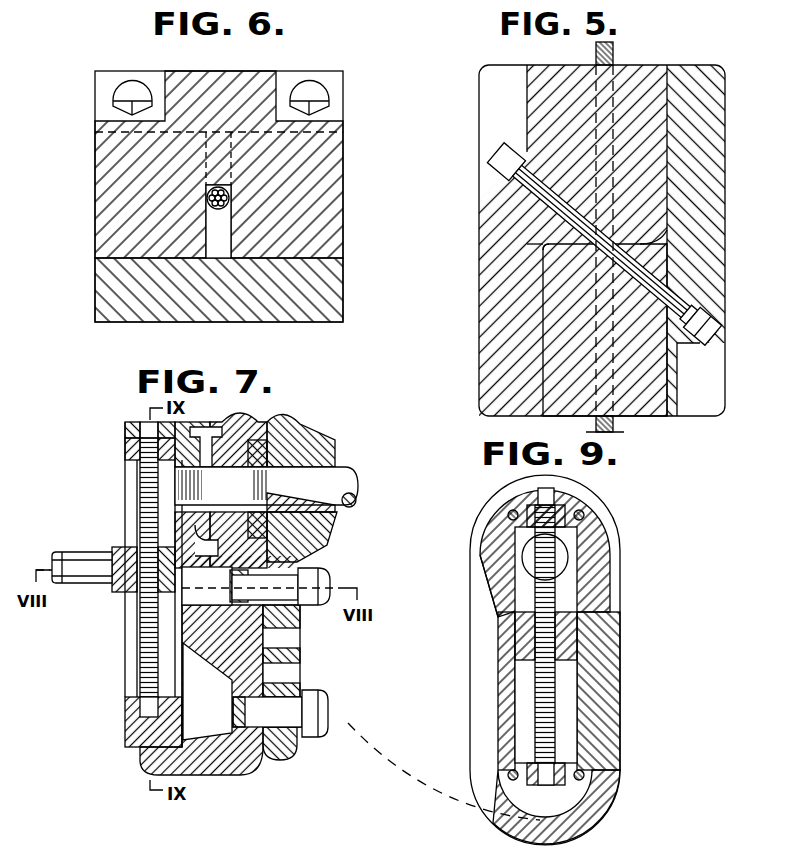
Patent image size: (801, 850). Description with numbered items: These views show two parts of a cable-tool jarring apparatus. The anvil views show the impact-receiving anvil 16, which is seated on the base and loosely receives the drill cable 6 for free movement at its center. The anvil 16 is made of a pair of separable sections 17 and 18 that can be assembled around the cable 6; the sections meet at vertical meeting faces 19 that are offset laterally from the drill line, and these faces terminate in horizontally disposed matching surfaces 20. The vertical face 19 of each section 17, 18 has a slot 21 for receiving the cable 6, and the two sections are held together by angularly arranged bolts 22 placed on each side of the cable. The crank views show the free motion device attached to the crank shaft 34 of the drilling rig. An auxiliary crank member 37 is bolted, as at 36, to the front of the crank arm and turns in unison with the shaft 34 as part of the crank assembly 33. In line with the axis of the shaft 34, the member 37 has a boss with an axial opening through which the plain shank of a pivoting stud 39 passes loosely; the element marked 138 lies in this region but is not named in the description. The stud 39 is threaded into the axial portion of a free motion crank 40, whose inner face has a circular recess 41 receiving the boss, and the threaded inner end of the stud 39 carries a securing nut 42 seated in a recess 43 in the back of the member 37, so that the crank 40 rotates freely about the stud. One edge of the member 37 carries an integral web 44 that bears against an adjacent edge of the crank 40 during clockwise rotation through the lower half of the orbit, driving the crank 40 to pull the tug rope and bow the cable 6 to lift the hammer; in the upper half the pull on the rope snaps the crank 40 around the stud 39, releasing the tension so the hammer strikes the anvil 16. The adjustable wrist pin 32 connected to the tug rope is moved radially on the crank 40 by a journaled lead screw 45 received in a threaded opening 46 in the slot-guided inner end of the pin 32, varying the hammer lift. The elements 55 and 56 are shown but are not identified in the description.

In FIG. 6, the drill cable 6 is at (229, 202).
In FIG. 5, the drill cable 6 is at (596, 55).
In FIG. 6, the impact-receiving anvil 16 is at (95, 218).
In FIG. 5, the impact-receiving anvil 16 is at (479, 258).
In FIG. 6, the anvil section 17 is at (337, 161).
In FIG. 5, the anvil section 17 is at (485, 316).
In FIG. 6, the anvil section 18 is at (323, 302).
In FIG. 5, the anvil section 18 is at (716, 250).
In FIG. 5, the vertical meeting faces 19 is at (667, 113).
In FIG. 5, the horizontally disposed matching surfaces 20 is at (563, 236).
In FIG. 6, the slot 21 is at (219, 243).
In FIG. 6, the angularly arranged bolts 22 is at (118, 100).
In FIG. 5, the angularly arranged bolts 22 is at (655, 242).
In FIG. 7, the adjustable wrist pin 32 is at (82, 552).
In FIG. 7, the crank assembly 33 is at (120, 646).
In FIG. 7, the crank shaft 34 is at (342, 480).
In FIG. 7, the bolts 36 is at (298, 606).
In FIG. 7, the auxiliary crank member 37 is at (213, 763).
In FIG. 9, the auxiliary crank member 37 is at (575, 822).
In FIG. 7, the pivoting stud 39 is at (230, 476).
In FIG. 7, the free motion crank 40 is at (125, 735).
In FIG. 9, the free motion crank 40 is at (500, 620).
In FIG. 7, the circular recess 41 is at (138, 535).
In FIG. 7, the securing nut 42 is at (334, 517).
In FIG. 7, the recess 43 is at (255, 537).
In FIG. 9, the integral web 44 is at (608, 684).
In FIG. 7, the journaled lead screw 45 is at (140, 680).
In FIG. 9, the journaled lead screw 45 is at (555, 640).
In FIG. 7, the threaded opening 46 is at (128, 595).
In FIG. 7, the bolt 55 is at (290, 562).
In FIG. 7, the bolt 56 is at (280, 713).
In FIG. 7, the retainer 138 is at (210, 430).